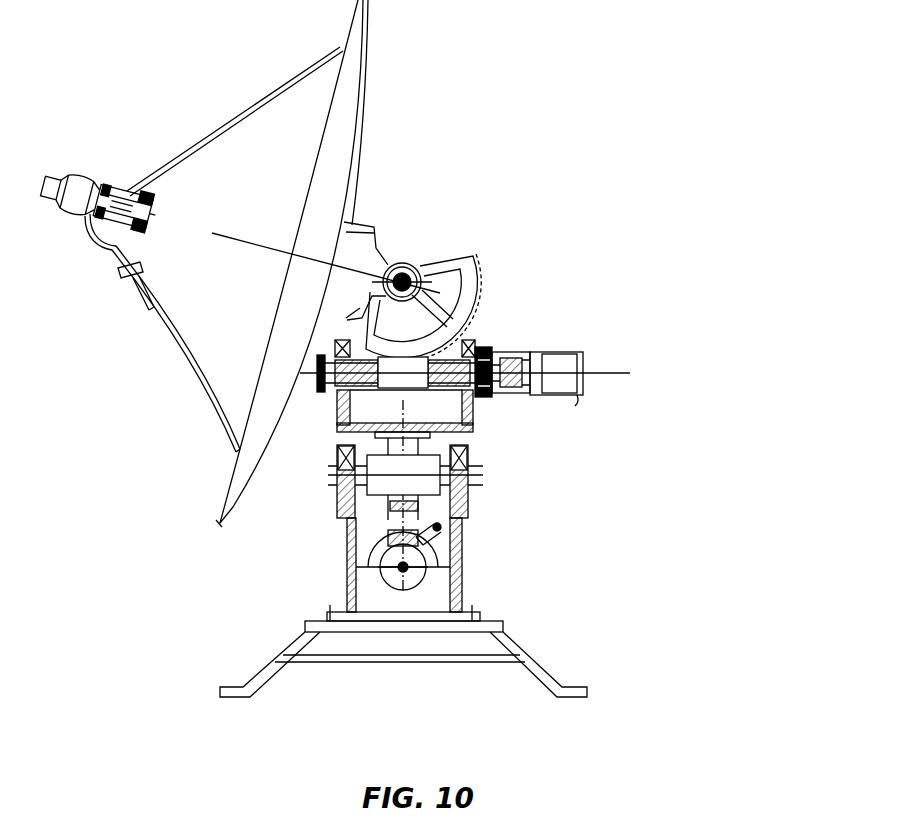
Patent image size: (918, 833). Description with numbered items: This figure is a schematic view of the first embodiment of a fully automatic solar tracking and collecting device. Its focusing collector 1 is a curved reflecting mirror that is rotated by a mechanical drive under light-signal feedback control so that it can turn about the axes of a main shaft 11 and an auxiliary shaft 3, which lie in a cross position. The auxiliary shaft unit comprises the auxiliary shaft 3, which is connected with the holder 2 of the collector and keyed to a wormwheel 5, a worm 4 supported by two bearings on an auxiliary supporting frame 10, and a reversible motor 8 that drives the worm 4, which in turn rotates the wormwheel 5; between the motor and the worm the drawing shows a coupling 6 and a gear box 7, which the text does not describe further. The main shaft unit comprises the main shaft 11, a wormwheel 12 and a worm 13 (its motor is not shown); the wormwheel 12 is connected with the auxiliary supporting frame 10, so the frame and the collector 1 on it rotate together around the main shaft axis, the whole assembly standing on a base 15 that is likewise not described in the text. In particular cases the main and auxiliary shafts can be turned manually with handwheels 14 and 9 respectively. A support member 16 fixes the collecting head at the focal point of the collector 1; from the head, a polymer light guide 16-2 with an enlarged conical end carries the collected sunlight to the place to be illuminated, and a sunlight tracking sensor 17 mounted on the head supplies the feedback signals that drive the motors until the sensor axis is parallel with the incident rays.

The focusing collector 1 is at (355, 118).
The holder of the focusing collector 2 is at (385, 262).
The auxiliary shaft 3 is at (418, 264).
The worm 4 is at (445, 430).
The wormwheel 5 is at (473, 297).
The coupling 6 is at (500, 392).
The gear box 7 is at (520, 367).
The reversible motor 8 is at (562, 380).
The handwheel 9 is at (330, 378).
The auxiliary supporting frame 10 is at (467, 452).
The main shaft 11 is at (343, 502).
The wormwheel 12 is at (358, 553).
The worm 13 is at (400, 567).
The handwheel 14 is at (440, 530).
The base 15 is at (523, 658).
The support member 16 is at (240, 120).
The polymer light guide 16-2 is at (102, 247).
The sunlight tracking sensor 17 is at (72, 180).